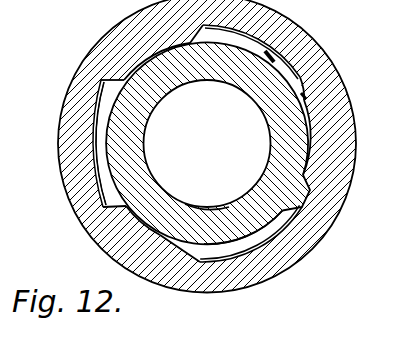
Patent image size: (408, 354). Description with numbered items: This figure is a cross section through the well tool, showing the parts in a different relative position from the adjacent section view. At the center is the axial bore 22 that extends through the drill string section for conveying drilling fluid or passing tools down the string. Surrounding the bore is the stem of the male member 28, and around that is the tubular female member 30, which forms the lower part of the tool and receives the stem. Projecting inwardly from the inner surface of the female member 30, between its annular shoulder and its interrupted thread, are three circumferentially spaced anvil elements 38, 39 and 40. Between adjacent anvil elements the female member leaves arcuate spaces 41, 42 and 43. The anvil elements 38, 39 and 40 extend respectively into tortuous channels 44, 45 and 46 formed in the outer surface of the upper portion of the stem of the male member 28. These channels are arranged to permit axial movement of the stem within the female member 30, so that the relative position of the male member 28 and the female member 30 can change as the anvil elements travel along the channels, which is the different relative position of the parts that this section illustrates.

The axial bore 22 is at (163, 198).
The male member 28 is at (228, 207).
The female member 30 is at (89, 228).
The anvil element 38 is at (307, 142).
The anvil element 39 is at (160, 236).
The anvil element 40 is at (143, 60).
The arcuate space 41 is at (282, 233).
The arcuate space 42 is at (90, 162).
The arcuate space 43 is at (291, 63).
The tortuous channel 44 is at (250, 243).
The tortuous channel 45 is at (110, 106).
The tortuous channel 46 is at (270, 55).